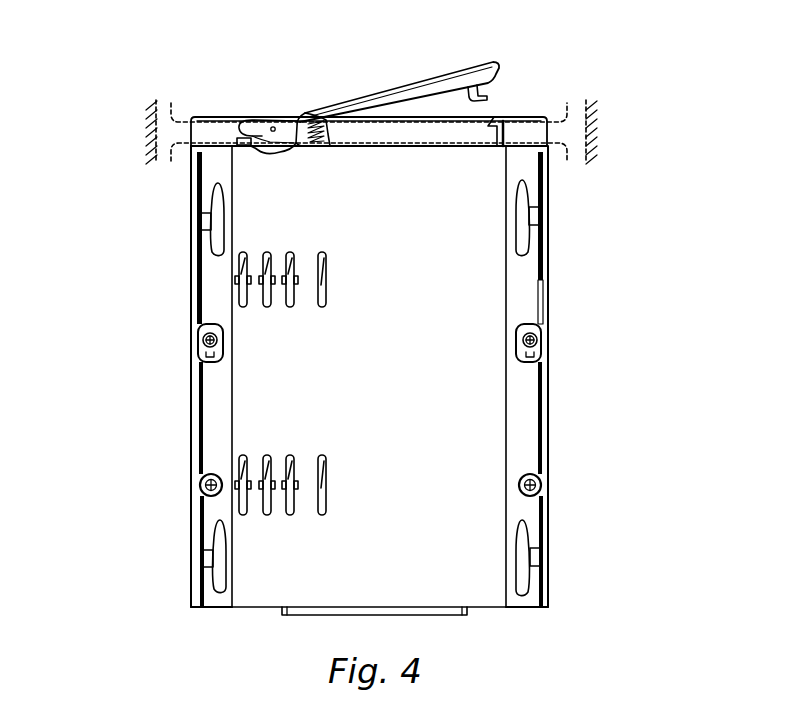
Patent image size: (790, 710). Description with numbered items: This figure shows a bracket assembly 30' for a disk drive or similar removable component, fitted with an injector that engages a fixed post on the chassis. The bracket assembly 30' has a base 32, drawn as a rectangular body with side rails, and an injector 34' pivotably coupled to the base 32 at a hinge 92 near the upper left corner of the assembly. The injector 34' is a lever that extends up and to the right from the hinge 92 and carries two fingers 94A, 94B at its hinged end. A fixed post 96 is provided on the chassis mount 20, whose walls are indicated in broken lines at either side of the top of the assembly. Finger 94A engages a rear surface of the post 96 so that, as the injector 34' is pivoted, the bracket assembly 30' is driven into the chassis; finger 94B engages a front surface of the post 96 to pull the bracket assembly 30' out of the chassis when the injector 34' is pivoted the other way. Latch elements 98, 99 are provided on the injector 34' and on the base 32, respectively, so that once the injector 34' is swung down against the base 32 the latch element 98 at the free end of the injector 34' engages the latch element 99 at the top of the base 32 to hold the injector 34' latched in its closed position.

The chassis mount 20 is at (163, 127).
The bracket assembly 30' is at (369, 359).
The base 32 is at (527, 314).
The injector 34' is at (397, 92).
The hinge 92 is at (273, 126).
The finger 94A is at (255, 157).
The finger 94B is at (246, 126).
The fixed post 96 is at (241, 152).
The latch element 98 is at (490, 98).
The latch element 99 is at (492, 128).